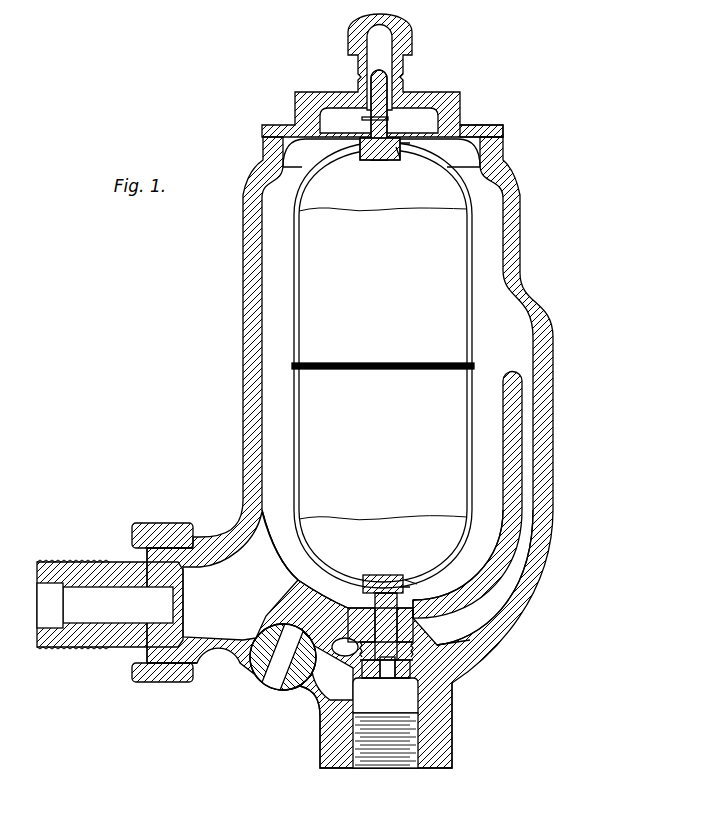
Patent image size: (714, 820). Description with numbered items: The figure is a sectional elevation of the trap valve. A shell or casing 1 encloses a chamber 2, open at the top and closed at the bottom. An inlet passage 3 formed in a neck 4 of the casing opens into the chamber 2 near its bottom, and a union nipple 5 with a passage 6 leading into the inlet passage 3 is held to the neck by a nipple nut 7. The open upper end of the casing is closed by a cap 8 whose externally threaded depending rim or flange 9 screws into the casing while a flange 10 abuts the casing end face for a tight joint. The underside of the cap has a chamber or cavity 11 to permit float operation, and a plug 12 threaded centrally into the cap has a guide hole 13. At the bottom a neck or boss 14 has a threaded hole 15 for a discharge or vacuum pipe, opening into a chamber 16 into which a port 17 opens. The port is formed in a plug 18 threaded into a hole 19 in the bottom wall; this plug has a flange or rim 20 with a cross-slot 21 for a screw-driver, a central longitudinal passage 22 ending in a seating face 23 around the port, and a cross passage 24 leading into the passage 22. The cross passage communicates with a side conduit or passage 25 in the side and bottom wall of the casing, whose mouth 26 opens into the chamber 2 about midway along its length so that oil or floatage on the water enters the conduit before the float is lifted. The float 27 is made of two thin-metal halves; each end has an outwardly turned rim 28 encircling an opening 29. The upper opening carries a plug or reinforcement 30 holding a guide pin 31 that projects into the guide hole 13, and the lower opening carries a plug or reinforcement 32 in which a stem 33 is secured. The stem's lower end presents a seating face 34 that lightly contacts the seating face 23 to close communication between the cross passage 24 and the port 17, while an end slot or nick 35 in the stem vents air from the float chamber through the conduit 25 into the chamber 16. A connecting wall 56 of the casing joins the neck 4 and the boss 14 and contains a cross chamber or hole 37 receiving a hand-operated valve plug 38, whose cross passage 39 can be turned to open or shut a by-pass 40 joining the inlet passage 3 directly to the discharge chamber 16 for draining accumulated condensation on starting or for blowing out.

The shell or casing 1 is at (236, 362).
The chamber 2 is at (371, 365).
The inlet passage 3 is at (240, 576).
The neck 4 is at (207, 547).
The union nipple 5 is at (78, 565).
The passage 6 is at (105, 605).
The nipple nut 7 is at (162, 588).
The cap 8 is at (382, 75).
The depending rim or flange 9 is at (470, 168).
The flange 10 is at (481, 120).
The chamber or cavity 11 is at (379, 120).
The plug 12 is at (397, 108).
The guide hole 13 is at (384, 37).
The neck or boss 14 is at (398, 725).
The threaded hole 15 is at (383, 758).
The chamber 16 is at (385, 695).
The port 17 is at (387, 680).
The plug 18 is at (421, 614).
The hole 19 is at (463, 607).
The flange or rim 20 is at (347, 609).
The cross-slot 21 is at (377, 598).
The central longitudinal passage or hole 22 is at (487, 637).
The seating face 23 is at (372, 648).
The cross passage 24 is at (443, 665).
The side conduit or passage 25 is at (507, 583).
The mouth 26 is at (471, 476).
The float 27 is at (383, 386).
The outwardly turned rim 28 is at (410, 143).
The hole or opening 29 is at (400, 150).
The plug or reinforcement 30 is at (393, 160).
The guide pin 31 is at (371, 119).
The plug or reinforcement 32 is at (395, 576).
The stem 33 is at (363, 584).
The seating face 34 is at (443, 687).
The end slot or nick 35 is at (443, 675).
The cross chamber or hole 37 is at (282, 688).
The valve plug 38 is at (238, 672).
The cross passage 39 is at (270, 673).
The by-pass 40 is at (248, 628).
The body wall 56 is at (292, 698).